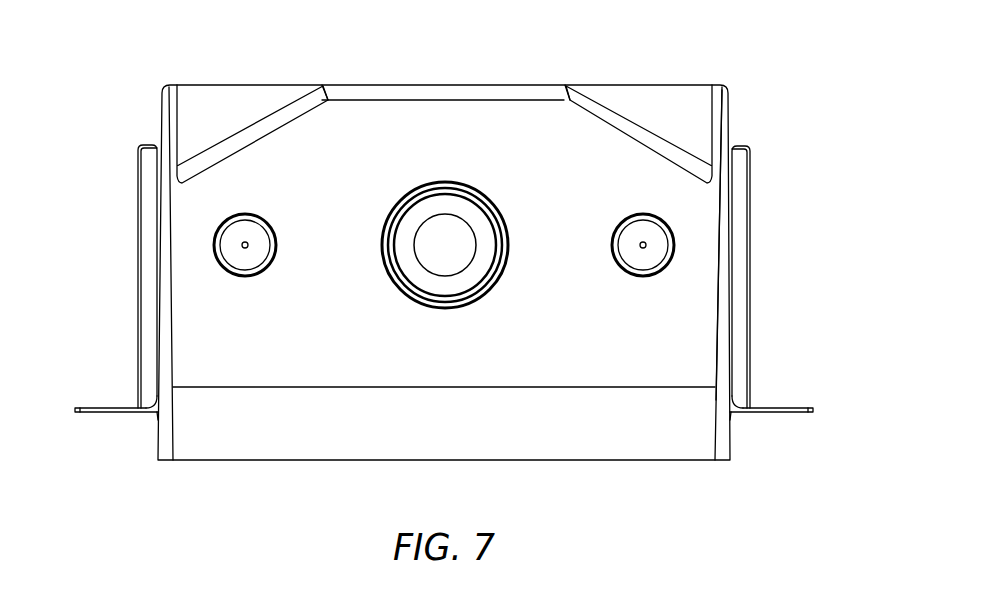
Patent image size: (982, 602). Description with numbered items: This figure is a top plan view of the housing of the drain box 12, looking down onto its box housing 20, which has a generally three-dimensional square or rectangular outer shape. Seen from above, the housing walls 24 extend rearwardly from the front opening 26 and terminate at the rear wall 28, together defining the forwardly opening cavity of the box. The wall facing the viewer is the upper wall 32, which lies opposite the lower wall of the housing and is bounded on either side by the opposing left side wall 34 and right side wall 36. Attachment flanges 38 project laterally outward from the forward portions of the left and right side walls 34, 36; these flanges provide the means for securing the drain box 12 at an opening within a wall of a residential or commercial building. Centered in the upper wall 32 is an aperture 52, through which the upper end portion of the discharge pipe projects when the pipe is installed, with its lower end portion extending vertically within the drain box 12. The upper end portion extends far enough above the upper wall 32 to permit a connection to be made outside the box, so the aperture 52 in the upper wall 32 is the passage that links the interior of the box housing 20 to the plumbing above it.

The drain box 12 is at (784, 72).
The box housing 20 is at (700, 272).
The housing walls 24 is at (725, 340).
The front opening 26 is at (665, 460).
The rear wall 28 is at (262, 85).
The upper wall 32 is at (522, 147).
The left side wall 34 is at (167, 260).
The right side wall 36 is at (725, 222).
The attachment flanges 38 is at (105, 412).
The aperture 52 is at (437, 240).